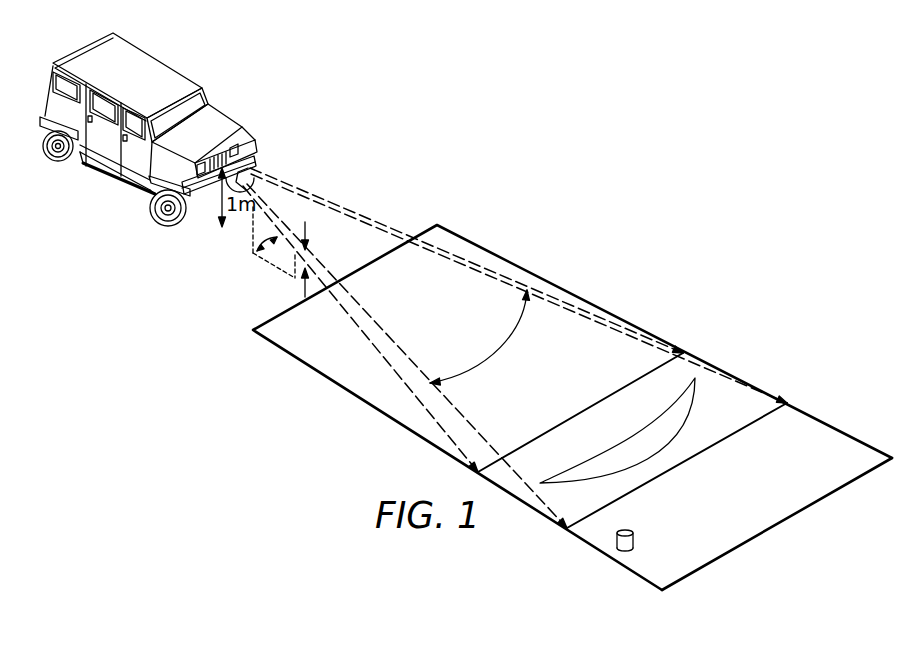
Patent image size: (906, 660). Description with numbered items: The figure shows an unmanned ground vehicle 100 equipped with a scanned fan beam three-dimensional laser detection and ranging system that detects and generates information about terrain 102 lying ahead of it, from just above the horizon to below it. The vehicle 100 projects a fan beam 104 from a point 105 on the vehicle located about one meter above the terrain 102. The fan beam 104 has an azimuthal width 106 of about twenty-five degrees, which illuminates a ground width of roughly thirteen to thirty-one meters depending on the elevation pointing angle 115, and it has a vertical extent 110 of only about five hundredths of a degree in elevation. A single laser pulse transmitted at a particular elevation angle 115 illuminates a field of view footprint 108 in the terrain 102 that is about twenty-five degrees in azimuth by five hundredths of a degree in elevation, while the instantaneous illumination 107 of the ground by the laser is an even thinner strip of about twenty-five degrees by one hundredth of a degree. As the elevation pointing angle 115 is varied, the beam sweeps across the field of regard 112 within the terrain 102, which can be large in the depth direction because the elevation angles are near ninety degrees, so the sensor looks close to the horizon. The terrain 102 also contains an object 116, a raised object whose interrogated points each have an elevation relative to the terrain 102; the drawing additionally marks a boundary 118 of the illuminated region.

The vehicle 100 is at (142, 135).
The terrain 102 is at (500, 171).
The fan beam 104 is at (503, 274).
The point 105 is at (211, 133).
The azimuthal width 106 is at (502, 351).
The instantaneous illumination 107 is at (657, 456).
The field of view footprint 108 is at (742, 432).
The vertical extent 110 is at (305, 290).
The field of regard 112 is at (827, 432).
The elevation pointing angle 115 is at (262, 258).
The object 116 is at (612, 543).
The far edge of detection region 118 is at (664, 589).